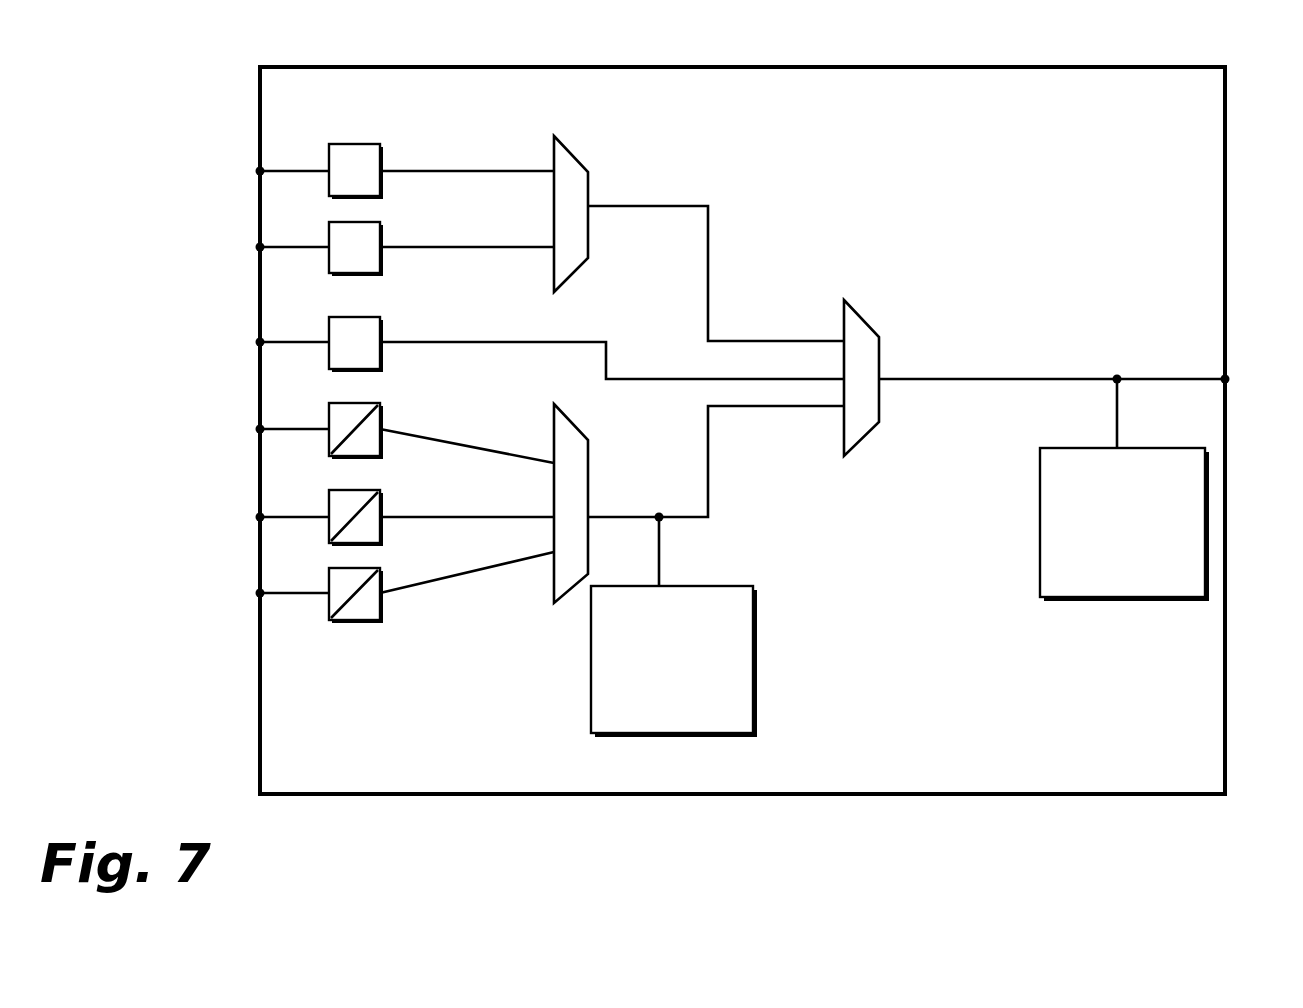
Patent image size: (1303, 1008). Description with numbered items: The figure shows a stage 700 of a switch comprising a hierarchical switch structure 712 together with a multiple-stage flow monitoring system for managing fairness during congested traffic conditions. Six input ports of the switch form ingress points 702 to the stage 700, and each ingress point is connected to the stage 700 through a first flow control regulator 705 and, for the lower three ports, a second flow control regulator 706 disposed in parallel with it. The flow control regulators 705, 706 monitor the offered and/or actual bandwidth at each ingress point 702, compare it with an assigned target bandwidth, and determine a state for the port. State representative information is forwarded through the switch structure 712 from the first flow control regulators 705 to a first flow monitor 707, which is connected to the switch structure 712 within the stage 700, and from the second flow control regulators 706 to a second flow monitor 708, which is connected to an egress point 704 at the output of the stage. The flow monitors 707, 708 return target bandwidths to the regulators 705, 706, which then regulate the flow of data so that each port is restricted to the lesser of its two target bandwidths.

The stage 700 is at (1014, 800).
The ingress points 702 is at (257, 170).
The egress point 704 is at (1222, 378).
The first flow control regulator 705 is at (352, 144).
The second flow control regulator 706 is at (370, 457).
The first flow monitor 707 is at (753, 620).
The second flow monitor 708 is at (1040, 482).
The hierarchical switch structure 712 is at (810, 172).